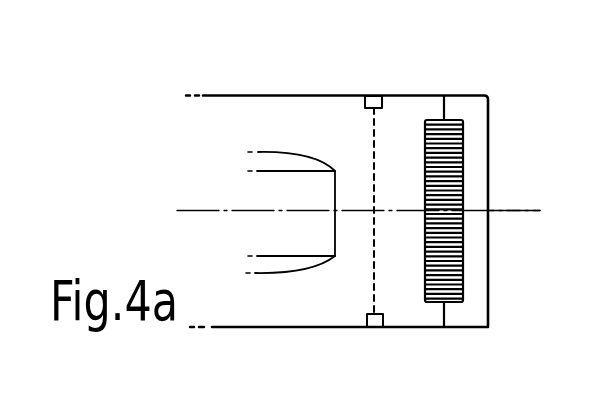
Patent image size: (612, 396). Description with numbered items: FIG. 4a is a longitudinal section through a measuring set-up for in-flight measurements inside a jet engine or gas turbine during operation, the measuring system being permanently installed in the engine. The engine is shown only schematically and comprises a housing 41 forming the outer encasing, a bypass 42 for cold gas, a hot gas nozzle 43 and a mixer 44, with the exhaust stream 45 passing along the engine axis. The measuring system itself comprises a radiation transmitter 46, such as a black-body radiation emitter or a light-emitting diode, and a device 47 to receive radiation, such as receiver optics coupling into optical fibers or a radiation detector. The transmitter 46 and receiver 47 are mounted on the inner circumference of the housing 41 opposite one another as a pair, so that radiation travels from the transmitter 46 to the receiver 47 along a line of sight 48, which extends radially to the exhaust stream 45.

The housing 41 is at (227, 96).
The bypass 42 is at (275, 118).
The hot gas nozzle 43 is at (298, 193).
The mixer 44 is at (453, 120).
The exhaust stream 45 is at (512, 211).
The radiation transmitter 46 is at (374, 96).
The device to receive radiation 47 is at (374, 328).
The line of sight 48 is at (375, 261).